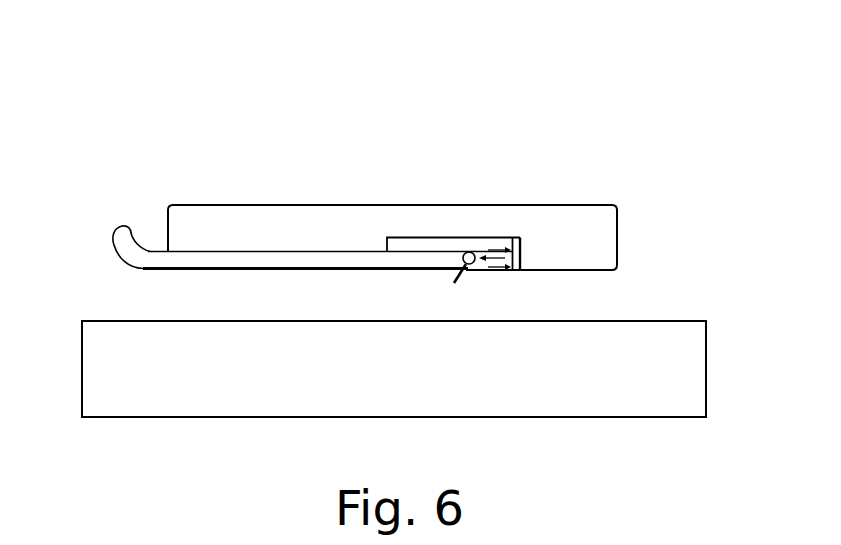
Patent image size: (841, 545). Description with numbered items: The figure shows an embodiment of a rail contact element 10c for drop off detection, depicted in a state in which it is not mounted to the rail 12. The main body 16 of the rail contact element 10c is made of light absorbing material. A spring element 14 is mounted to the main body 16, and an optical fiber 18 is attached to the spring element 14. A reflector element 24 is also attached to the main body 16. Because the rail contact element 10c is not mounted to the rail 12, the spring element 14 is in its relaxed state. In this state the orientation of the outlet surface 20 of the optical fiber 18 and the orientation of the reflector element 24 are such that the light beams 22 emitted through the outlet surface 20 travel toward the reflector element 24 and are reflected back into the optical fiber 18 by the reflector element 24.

The rail contact element 10c is at (598, 143).
The rail 12 is at (191, 382).
The spring element 14 is at (294, 267).
The main body 16 is at (240, 241).
The optical fiber 18 is at (123, 241).
The outlet surface 20 is at (466, 252).
The light beams 22 is at (492, 266).
The reflector element 24 is at (518, 240).